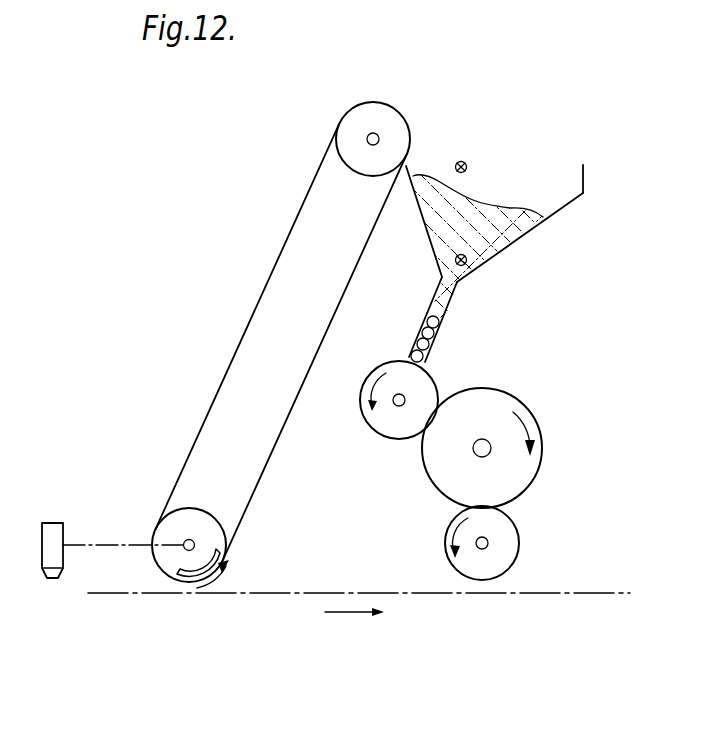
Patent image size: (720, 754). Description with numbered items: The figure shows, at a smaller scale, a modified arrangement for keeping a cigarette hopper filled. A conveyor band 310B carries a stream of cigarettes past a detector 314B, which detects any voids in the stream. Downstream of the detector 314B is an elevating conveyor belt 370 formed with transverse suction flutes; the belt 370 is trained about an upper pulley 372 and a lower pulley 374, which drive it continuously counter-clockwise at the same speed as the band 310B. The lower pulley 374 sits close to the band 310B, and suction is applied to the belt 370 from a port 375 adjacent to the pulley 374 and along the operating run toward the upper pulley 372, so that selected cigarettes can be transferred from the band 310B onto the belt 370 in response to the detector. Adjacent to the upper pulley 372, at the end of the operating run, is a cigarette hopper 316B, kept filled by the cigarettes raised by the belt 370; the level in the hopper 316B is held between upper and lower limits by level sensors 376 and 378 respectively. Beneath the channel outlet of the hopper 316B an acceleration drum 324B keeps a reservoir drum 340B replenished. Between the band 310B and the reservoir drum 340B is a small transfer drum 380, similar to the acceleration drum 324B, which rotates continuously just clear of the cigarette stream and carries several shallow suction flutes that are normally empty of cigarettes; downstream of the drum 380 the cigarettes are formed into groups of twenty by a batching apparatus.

The elevating conveyor belt 370 is at (275, 445).
The upper pulley 372 is at (398, 113).
The lower pulley 374 is at (163, 533).
The port 375 is at (227, 560).
The level sensor 376 is at (462, 161).
The level sensor 378 is at (466, 262).
The cigarette hopper 316B is at (560, 210).
The acceleration drum 324B is at (432, 378).
The reservoir drum 340B is at (530, 411).
The transfer drum 380 is at (516, 540).
The conveyor band 310B is at (526, 596).
The detector 314B is at (70, 502).